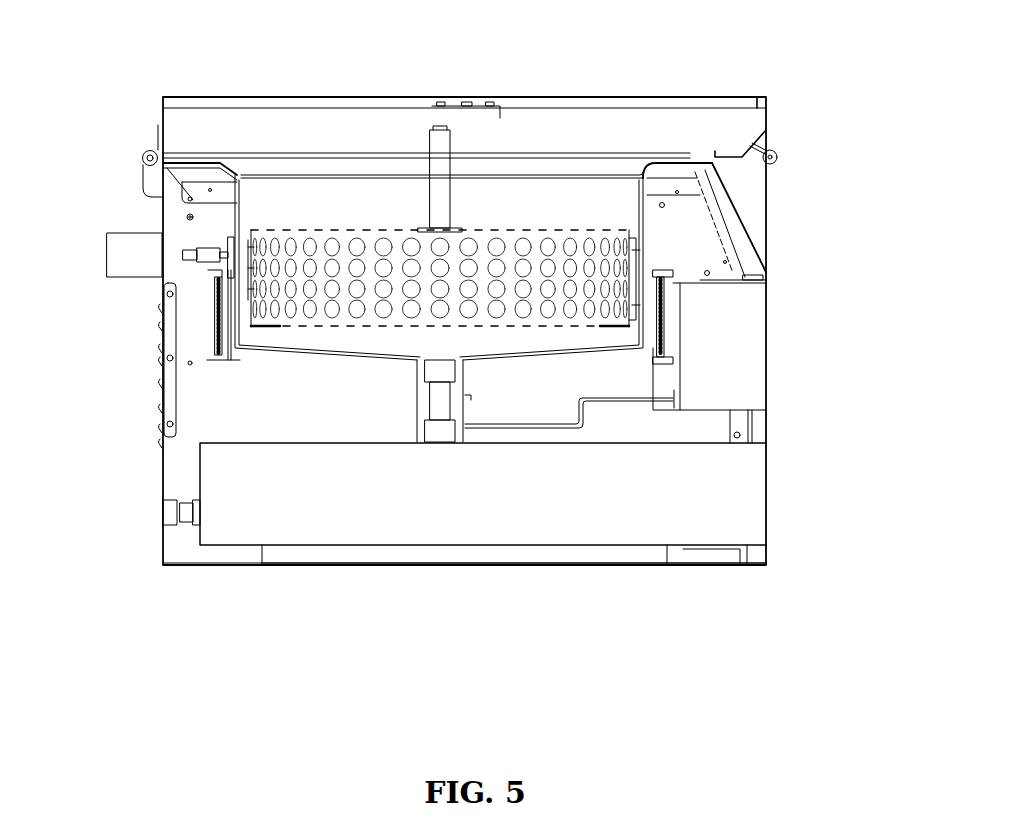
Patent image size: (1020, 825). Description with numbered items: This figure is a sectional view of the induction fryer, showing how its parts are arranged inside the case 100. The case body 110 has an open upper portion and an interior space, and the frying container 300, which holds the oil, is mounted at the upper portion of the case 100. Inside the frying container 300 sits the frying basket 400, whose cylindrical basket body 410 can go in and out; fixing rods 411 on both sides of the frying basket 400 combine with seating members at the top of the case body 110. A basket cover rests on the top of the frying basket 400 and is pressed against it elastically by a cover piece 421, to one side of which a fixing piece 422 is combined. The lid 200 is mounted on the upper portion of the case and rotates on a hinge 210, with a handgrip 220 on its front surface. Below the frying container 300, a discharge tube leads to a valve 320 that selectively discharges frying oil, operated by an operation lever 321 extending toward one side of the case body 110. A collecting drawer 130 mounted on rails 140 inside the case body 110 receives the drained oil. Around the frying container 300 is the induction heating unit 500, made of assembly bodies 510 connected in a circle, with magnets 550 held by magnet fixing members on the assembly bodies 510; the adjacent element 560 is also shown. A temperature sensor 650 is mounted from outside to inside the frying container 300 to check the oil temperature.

The case 100 is at (617, 565).
The case body 110 is at (690, 566).
The collecting drawer 130 is at (237, 543).
The rails 140 is at (531, 565).
The lid 200 is at (622, 97).
The hinge 210 is at (147, 157).
The handgrip 220 is at (783, 152).
The frying container 300 is at (648, 232).
The valve 320 is at (427, 403).
The operation lever 321 is at (520, 430).
The frying basket 400 is at (637, 319).
The basket body 410 is at (634, 257).
The fixing rods 411 is at (438, 203).
The cover piece 421 is at (463, 228).
The fixing piece 422 is at (452, 104).
The induction heating unit 500 is at (777, 284).
The assembly bodies 510 is at (663, 363).
The magnets 550 is at (668, 345).
The upper bracket 560 is at (666, 303).
The temperature sensor 650 is at (212, 253).